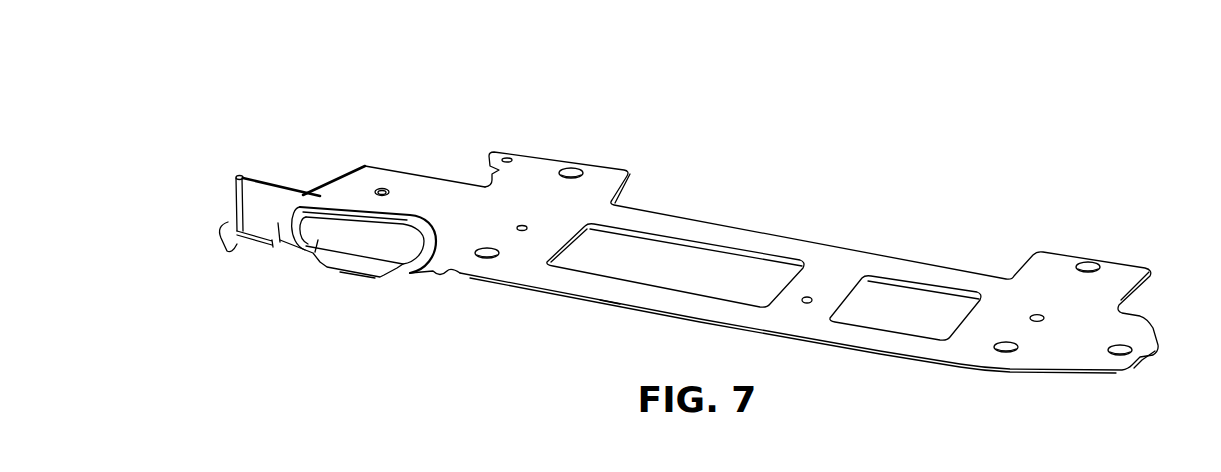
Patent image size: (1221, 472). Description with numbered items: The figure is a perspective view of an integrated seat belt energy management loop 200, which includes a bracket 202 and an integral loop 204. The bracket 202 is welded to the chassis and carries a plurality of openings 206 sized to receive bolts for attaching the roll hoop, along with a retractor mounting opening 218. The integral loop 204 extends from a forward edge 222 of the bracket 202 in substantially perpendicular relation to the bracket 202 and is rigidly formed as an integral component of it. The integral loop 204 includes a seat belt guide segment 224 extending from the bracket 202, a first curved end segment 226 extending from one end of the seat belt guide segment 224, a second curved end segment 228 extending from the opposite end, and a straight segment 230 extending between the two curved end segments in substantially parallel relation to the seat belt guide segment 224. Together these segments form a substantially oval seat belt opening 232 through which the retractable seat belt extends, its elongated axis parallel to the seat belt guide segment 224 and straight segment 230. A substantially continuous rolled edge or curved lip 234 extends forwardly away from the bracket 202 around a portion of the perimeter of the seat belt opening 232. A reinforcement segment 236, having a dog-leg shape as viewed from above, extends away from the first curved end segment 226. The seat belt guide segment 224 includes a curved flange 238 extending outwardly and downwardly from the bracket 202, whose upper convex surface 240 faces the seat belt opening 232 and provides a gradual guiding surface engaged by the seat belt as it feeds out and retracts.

The energy management loop 200 is at (262, 107).
The bracket 202 is at (714, 196).
The integral loop 204 is at (282, 275).
The openings 206 is at (583, 170).
The retractor mounting opening 218 is at (382, 189).
The forward edge 222 is at (587, 298).
The seat belt guide segment 224 is at (314, 256).
The first curved end segment 226 is at (270, 243).
The second curved end segment 228 is at (437, 252).
The straight segment 230 is at (398, 210).
The seat belt opening 232 is at (402, 246).
The curved lip 234 is at (290, 200).
The reinforcement segment 236 is at (238, 176).
The curved flange 238 is at (345, 276).
The upper convex surface 240 is at (364, 268).